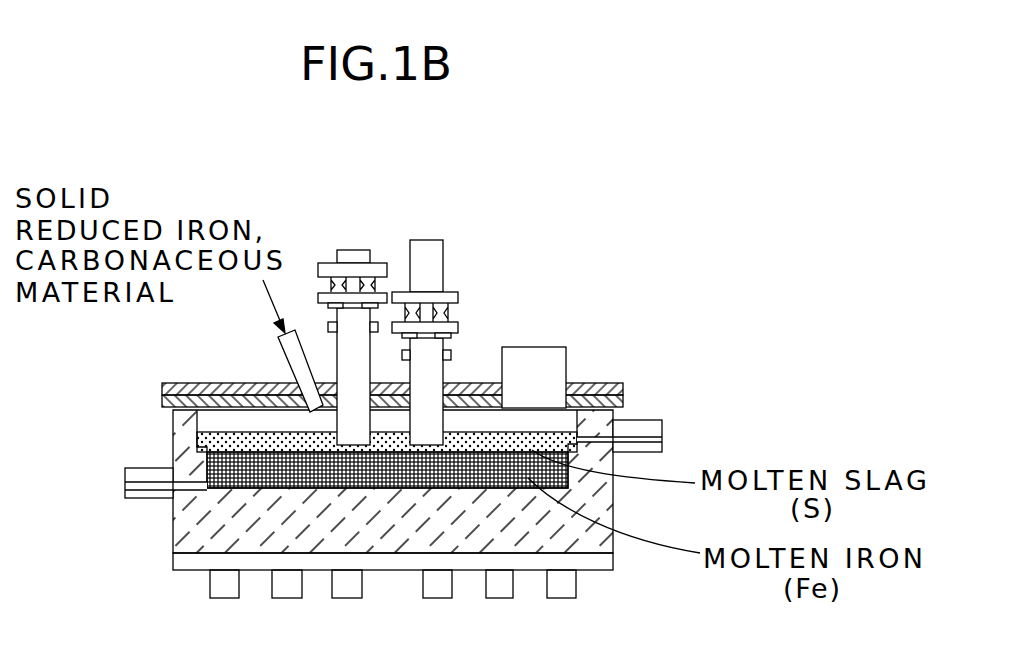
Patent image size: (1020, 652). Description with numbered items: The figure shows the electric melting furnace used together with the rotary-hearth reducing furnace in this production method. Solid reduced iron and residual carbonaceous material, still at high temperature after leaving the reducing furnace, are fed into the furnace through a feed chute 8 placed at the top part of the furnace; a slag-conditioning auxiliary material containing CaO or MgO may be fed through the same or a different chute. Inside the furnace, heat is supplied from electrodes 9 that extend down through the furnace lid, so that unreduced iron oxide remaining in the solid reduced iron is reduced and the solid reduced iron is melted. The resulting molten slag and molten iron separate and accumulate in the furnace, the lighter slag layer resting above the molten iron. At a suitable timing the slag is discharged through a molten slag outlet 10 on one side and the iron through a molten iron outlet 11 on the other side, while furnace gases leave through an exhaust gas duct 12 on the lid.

The feed chute 8 is at (288, 363).
The electrode 9 is at (348, 250).
The molten slag outlet 10 is at (660, 432).
The molten iron outlet 11 is at (137, 482).
The exhaust gas duct 12 is at (535, 347).